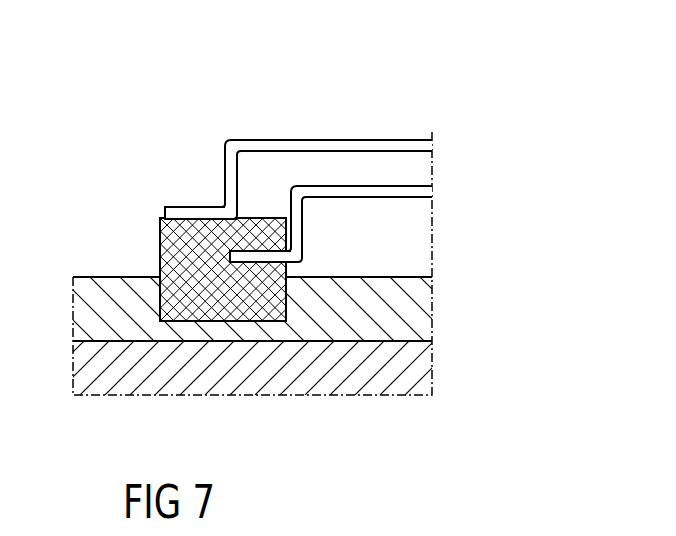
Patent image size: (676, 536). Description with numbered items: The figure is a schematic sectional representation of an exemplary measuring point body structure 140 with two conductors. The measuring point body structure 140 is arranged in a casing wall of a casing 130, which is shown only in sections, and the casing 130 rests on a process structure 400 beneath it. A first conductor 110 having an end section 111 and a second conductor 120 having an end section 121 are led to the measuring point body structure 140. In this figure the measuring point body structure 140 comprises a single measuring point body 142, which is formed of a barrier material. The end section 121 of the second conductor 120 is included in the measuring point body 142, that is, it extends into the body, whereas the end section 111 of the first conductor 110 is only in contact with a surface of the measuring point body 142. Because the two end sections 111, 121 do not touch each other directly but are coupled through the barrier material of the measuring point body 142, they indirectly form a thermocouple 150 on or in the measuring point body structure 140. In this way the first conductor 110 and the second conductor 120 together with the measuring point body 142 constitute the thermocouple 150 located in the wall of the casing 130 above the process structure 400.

The first conductor 110 is at (433, 145).
The end section of the first conductor 111 is at (195, 207).
The second conductor 120 is at (433, 192).
The end section of the second conductor 121 is at (254, 245).
The casing 130 is at (420, 306).
The measuring point body structure 140 is at (118, 98).
The measuring point body 142 is at (160, 257).
The thermocouple 150 is at (160, 234).
The process structure 400 is at (425, 372).